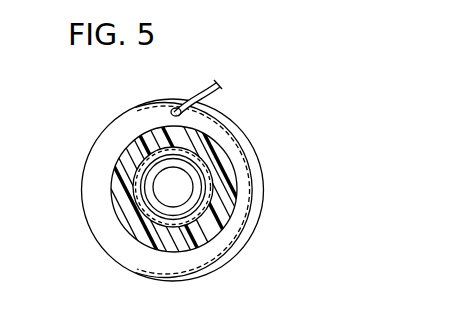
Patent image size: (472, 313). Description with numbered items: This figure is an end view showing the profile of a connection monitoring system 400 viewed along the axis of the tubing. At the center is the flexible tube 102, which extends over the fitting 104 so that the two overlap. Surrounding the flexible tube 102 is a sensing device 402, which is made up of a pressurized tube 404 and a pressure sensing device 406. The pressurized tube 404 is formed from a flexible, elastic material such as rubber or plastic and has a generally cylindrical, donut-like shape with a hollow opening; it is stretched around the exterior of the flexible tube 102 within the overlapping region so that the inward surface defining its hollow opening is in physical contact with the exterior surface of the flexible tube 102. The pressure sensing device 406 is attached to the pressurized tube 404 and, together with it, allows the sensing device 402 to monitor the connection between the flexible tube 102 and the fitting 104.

The connection monitoring system 400 is at (292, 87).
The sensing device 402 is at (112, 130).
The pressurized tube 404 is at (242, 223).
The pressure sensing device 406 is at (203, 80).
The fitting 104 is at (215, 174).
The flexible tube 102 is at (228, 197).